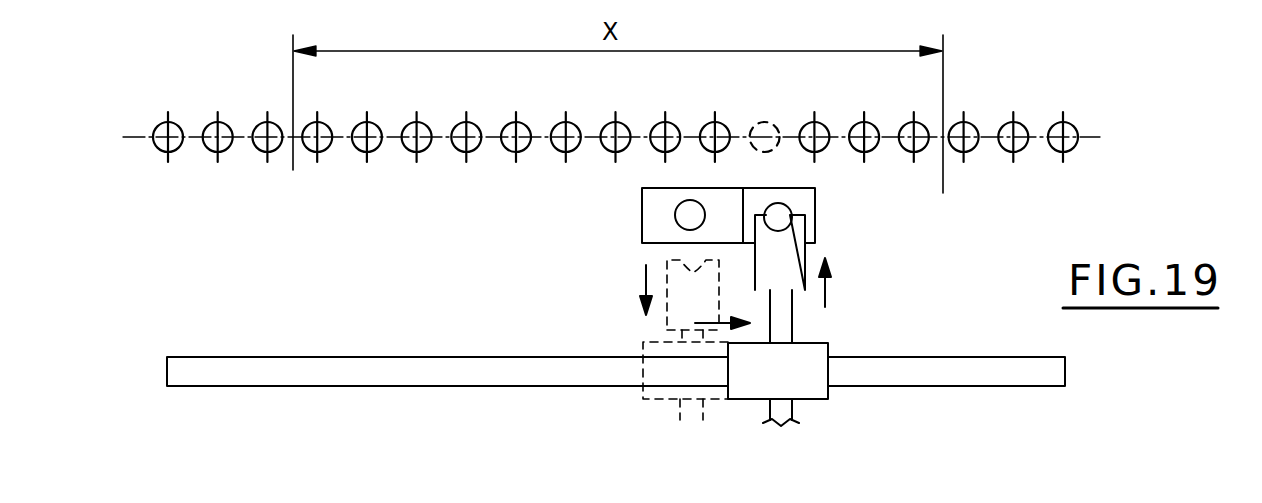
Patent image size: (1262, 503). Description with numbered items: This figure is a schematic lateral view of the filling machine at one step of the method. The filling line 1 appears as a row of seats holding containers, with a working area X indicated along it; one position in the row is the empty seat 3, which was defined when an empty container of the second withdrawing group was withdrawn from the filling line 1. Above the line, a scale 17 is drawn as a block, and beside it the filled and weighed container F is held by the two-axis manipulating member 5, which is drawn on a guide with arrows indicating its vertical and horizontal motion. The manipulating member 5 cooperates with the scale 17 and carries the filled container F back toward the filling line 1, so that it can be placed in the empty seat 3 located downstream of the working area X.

The filling line 1 is at (1094, 124).
The empty seat 3 is at (783, 114).
The scale 17 is at (651, 209).
The two-axis manipulating member 5 is at (842, 333).
The filled and weighed container F is at (788, 213).